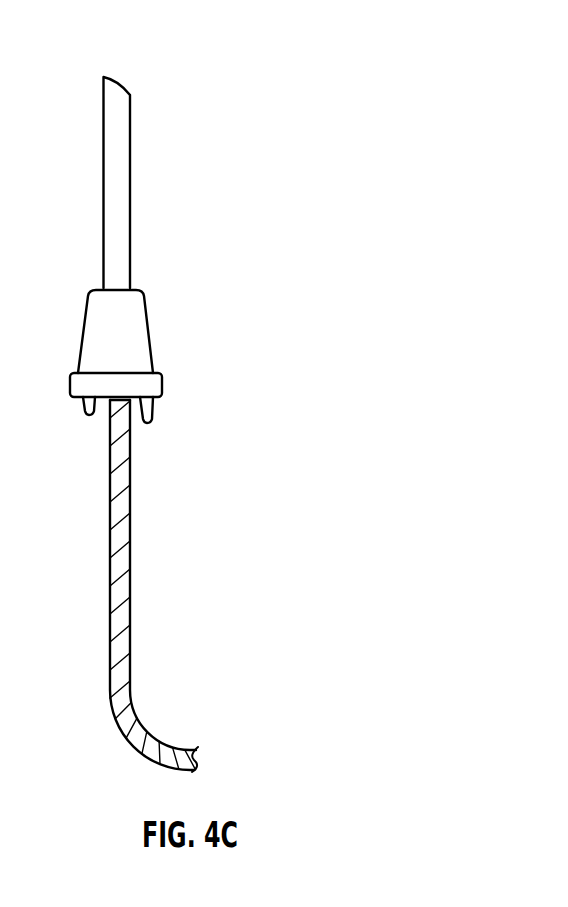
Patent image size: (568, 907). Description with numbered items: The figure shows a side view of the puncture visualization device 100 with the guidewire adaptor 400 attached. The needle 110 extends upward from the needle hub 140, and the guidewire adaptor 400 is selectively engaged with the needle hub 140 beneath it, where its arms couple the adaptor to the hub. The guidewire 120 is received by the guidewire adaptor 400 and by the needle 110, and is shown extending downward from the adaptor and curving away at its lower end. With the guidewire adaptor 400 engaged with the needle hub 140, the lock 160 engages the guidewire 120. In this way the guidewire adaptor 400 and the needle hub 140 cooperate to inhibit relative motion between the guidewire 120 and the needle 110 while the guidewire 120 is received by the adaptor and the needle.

The puncture visualization device 100 is at (219, 49).
The needle 110 is at (125, 160).
The guidewire 120 is at (118, 630).
The needle hub 140 is at (140, 380).
The lock 160 is at (104, 410).
The guidewire adaptor 400 is at (152, 418).